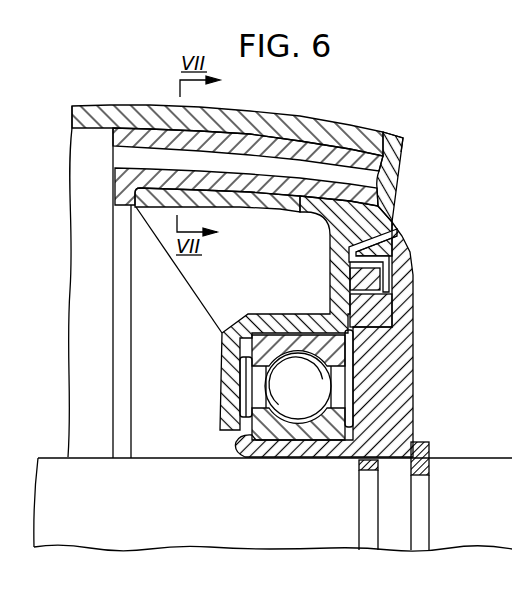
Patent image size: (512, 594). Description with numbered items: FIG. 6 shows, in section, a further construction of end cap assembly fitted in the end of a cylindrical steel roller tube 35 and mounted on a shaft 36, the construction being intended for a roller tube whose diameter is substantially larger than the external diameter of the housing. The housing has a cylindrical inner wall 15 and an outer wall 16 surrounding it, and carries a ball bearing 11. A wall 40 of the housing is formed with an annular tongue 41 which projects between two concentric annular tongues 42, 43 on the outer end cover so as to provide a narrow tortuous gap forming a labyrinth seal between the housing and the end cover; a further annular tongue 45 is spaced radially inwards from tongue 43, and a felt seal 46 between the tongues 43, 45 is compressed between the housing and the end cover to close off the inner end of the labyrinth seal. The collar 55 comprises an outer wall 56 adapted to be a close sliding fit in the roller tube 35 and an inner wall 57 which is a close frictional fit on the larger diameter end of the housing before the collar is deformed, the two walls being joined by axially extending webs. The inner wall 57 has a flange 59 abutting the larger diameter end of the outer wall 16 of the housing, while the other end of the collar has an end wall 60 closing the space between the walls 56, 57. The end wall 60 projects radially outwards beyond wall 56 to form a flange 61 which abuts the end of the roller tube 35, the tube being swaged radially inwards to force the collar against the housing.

The ball bearing 11 is at (358, 380).
The inner wall 15 is at (259, 317).
The outer wall 16 is at (238, 208).
The roller tube 35 is at (262, 108).
The shaft 36 is at (484, 458).
The wall of the housing 40 is at (332, 261).
The annular tongue 41 is at (390, 248).
The annular tongue 42 is at (397, 228).
The annular tongue 43 is at (378, 282).
The annular tongue 45 is at (395, 338).
The felt seal 46 is at (393, 305).
The collar 55 is at (116, 159).
The outer wall 56 is at (308, 145).
The inner wall 57 is at (269, 183).
The flange 59 is at (116, 197).
The end wall 60 is at (390, 177).
The flange 61 is at (397, 138).